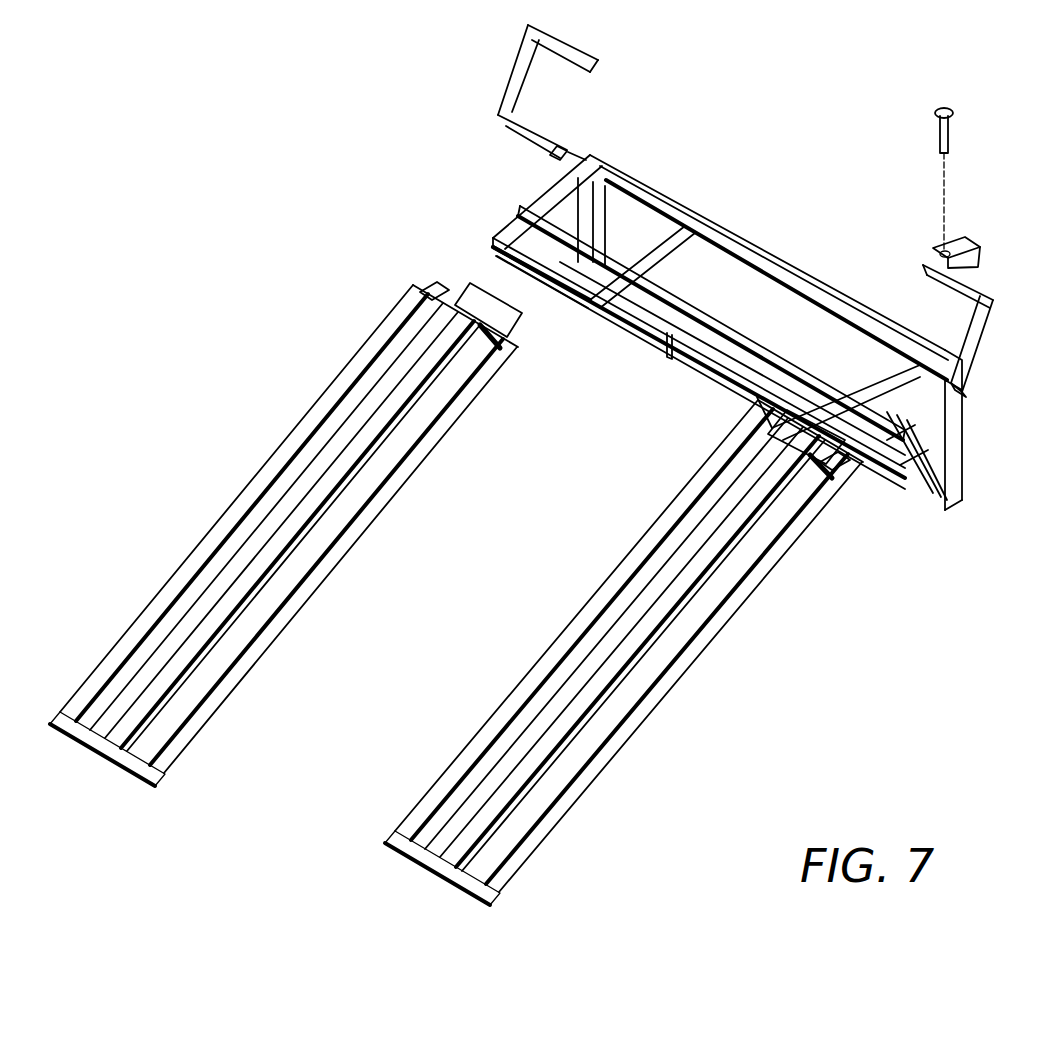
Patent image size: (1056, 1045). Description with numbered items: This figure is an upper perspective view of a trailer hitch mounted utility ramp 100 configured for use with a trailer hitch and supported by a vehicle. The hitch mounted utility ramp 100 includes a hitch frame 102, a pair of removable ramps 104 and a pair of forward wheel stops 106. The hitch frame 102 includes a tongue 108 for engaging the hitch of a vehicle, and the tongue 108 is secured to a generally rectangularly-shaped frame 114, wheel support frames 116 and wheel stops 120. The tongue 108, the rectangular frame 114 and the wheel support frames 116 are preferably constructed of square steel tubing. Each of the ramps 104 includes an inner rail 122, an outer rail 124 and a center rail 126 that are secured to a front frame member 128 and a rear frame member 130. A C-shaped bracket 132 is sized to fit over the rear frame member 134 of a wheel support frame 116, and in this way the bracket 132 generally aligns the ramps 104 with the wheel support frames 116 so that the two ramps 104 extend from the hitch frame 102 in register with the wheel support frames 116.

The hitch mounted utility ramp 100 is at (426, 216).
The hitch frame 102 is at (767, 185).
The removable ramps 104 is at (460, 577).
The forward wheel stops 106 is at (517, 63).
The tongue 108 is at (953, 237).
The generally rectangularly-shaped frame 114 is at (963, 458).
The wheel support frames 116 is at (583, 298).
The wheel stops 120 is at (522, 212).
The inner rail 122 is at (330, 574).
The outer rail 124 is at (251, 484).
The center rail 126 is at (340, 492).
The front frame member 128 is at (447, 297).
The rear frame member 130 is at (112, 768).
The C-shaped bracket 132 is at (478, 284).
The rear frame member of wheel support frame 134 is at (568, 291).